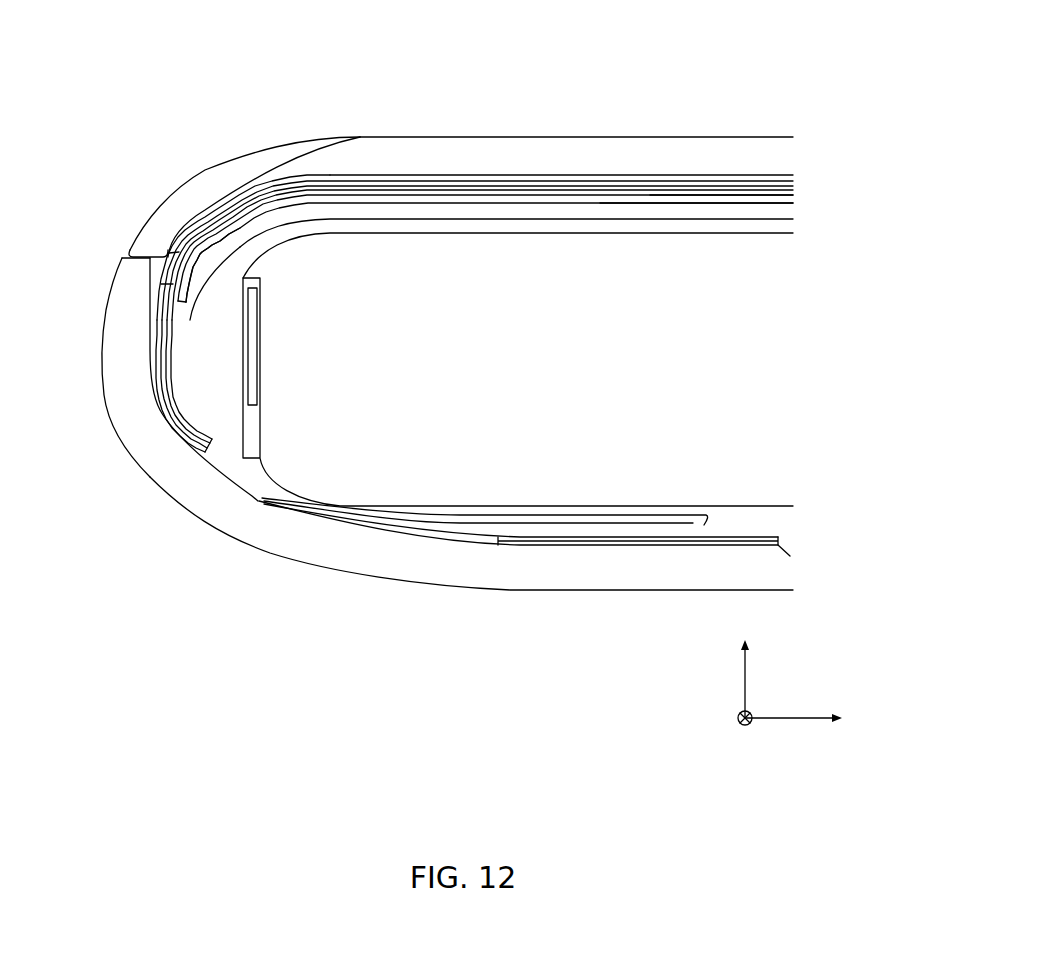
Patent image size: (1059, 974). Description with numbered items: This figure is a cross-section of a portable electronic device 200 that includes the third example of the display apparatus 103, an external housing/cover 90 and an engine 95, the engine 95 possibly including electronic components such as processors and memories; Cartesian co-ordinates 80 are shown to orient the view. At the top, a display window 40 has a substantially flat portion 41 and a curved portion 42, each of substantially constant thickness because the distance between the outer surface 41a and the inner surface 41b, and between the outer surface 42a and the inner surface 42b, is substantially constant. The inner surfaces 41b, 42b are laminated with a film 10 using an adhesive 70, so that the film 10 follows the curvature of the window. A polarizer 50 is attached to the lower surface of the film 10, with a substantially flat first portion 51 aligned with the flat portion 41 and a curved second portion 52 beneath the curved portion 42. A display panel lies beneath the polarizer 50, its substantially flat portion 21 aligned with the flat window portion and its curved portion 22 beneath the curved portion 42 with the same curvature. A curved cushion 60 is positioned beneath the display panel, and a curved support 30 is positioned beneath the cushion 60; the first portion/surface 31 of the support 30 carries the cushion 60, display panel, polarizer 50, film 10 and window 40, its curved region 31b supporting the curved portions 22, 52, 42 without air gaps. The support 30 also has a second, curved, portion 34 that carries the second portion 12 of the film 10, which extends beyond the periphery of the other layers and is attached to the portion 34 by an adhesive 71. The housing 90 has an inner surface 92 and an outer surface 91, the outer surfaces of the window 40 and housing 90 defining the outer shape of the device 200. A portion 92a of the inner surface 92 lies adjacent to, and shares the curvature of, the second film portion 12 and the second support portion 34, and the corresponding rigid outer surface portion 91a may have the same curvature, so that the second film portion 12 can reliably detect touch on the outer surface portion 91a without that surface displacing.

The film 10 is at (773, 188).
The second portion of the film 12 is at (157, 355).
The substantially flat portion of the display panel 21 is at (443, 203).
The curved portion of the display panel 22 is at (273, 213).
The curved support 30 is at (537, 236).
The first portion/surface of the curved support 31 is at (583, 220).
The curved region of the first portion of the support 31b is at (230, 273).
The second, curved, portion of the support 34 is at (165, 378).
The display window 40 is at (724, 72).
The substantially flat portion of the display window 41 is at (585, 128).
The outer surface of the substantially flat portion 41a is at (532, 180).
The inner surface of the substantially flat portion 41b is at (538, 178).
The curved portion of the display window 42 is at (162, 150).
The outer surface of the curved portion 42a is at (157, 208).
The inner surface of the curved portion 42b is at (212, 216).
The polarizer 50 is at (708, 193).
The first portion of the polarizer 51 is at (467, 192).
The second, curved, portion of the polarizer 52 is at (238, 228).
The curved cushion 60 is at (638, 206).
The adhesive 70 is at (747, 177).
The adhesive 71 is at (172, 393).
The Cartesian co-ordinates 80 is at (778, 745).
The external housing/cover 90 is at (220, 535).
The outer surface of the housing 91 is at (287, 562).
The outer surface portion of the housing 91a is at (103, 335).
The inner surface of the housing 92 is at (212, 473).
The portion of the inner surface of the housing 92a is at (157, 392).
The engine 95 is at (760, 403).
The third example of the display apparatus 103 is at (818, 228).
The portable electronic device 200 is at (170, 660).